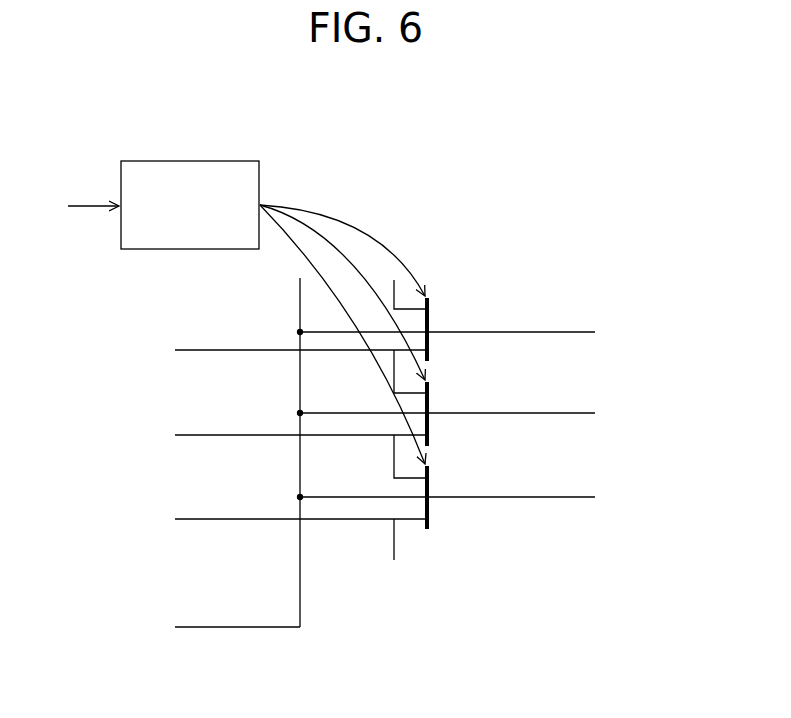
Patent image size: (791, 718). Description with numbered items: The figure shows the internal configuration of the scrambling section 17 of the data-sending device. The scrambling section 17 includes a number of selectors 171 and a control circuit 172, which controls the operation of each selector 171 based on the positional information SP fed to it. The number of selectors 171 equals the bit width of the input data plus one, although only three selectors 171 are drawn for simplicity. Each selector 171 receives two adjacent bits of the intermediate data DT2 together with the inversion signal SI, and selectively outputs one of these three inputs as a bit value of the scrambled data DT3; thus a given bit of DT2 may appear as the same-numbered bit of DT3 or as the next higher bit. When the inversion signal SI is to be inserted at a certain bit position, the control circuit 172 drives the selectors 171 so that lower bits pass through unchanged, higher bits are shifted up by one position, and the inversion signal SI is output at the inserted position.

The scrambling section 17 is at (78, 56).
The selector 171 is at (461, 270).
The control circuit 172 is at (183, 160).